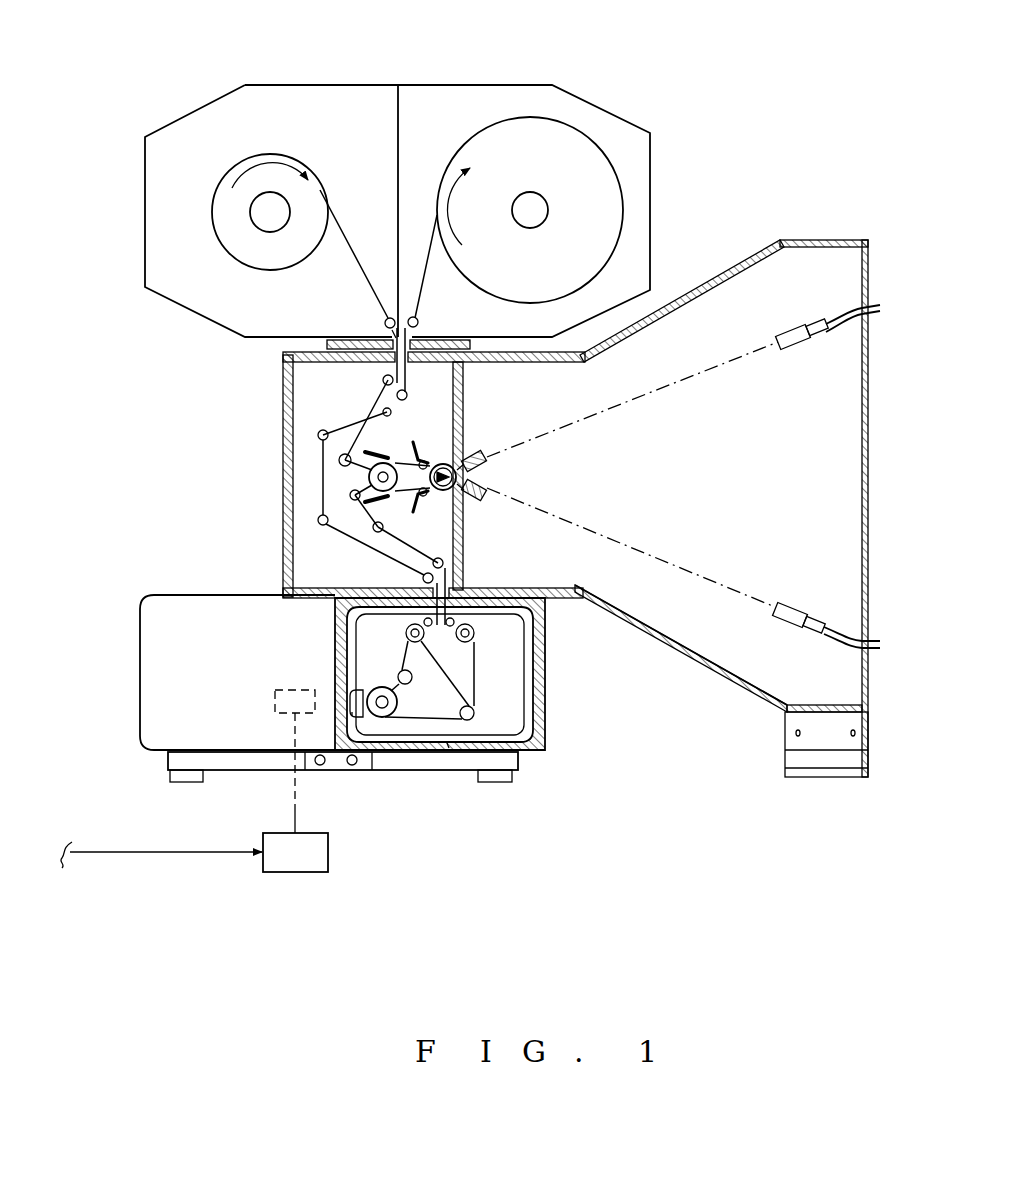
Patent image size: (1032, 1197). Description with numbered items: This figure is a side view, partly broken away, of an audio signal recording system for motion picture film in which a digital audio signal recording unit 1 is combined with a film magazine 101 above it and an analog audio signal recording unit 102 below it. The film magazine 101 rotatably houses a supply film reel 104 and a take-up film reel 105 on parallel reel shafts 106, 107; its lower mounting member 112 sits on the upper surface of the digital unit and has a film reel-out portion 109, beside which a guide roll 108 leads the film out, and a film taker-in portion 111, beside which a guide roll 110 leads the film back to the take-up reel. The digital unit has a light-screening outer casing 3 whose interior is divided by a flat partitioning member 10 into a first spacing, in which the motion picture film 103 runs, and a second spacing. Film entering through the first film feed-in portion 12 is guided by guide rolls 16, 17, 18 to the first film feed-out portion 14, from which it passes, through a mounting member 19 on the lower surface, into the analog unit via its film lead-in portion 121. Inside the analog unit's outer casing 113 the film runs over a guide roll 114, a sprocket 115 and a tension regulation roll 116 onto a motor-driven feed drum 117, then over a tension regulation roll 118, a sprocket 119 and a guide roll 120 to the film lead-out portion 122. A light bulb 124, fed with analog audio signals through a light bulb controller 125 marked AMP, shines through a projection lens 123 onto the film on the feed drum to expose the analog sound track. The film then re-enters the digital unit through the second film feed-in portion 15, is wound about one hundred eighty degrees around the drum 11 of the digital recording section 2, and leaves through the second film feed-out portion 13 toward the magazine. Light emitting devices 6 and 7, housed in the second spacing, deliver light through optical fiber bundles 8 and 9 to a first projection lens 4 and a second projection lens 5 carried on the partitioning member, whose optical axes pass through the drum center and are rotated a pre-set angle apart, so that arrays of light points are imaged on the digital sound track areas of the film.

The digital audio signal recording unit 1 is at (732, 257).
The digital recording section 2 is at (495, 430).
The outer casing 3 is at (728, 684).
The first projection lens 4 is at (486, 460).
The second projection lens 5 is at (488, 484).
The light emitting device 6 is at (806, 345).
The light emitting device 7 is at (805, 608).
The optical fiber bundle 8 is at (873, 312).
The optical fiber bundle 9 is at (877, 637).
The partitioning member 10 is at (462, 542).
The drum 11 is at (461, 440).
The first film feed-in portion 12 is at (380, 374).
The second film feed-out portion 13 is at (414, 372).
The first film feed-out portion 14 is at (424, 582).
The second film feed-in portion 15 is at (467, 563).
The guide roll 16 is at (320, 433).
The guide roll 17 is at (339, 460).
The guide roll 18 is at (319, 519).
The mounting member 19 is at (283, 592).
The film magazine 101 is at (608, 112).
The analog audio signal recording unit 102 is at (553, 727).
The motion picture film 103 is at (357, 257).
The supply film reel 104 is at (271, 157).
The take-up film reel 105 is at (533, 138).
The reel shaft 106 is at (267, 218).
The reel shaft 107 is at (538, 213).
The guide roll 108 is at (386, 320).
The film reel-out portion 109 is at (377, 327).
The guide roll 110 is at (416, 317).
The film taker-in portion 111 is at (424, 331).
The mounting member 112 is at (327, 342).
The outer casing 113 is at (362, 712).
The guide roll 114 is at (406, 637).
The sprocket 115 is at (410, 637).
The tension regulation roll 116 is at (447, 743).
The feed drum 117 is at (385, 717).
The tension regulation roll 118 is at (470, 718).
The sprocket 119 is at (470, 640).
The guide roll 120 is at (476, 633).
The film lead-in portion 121 is at (410, 586).
The film lead-out portion 122 is at (483, 596).
The projection lens 123 is at (352, 712).
The light bulb 124 is at (276, 703).
The light bulb controller 125 is at (296, 873).